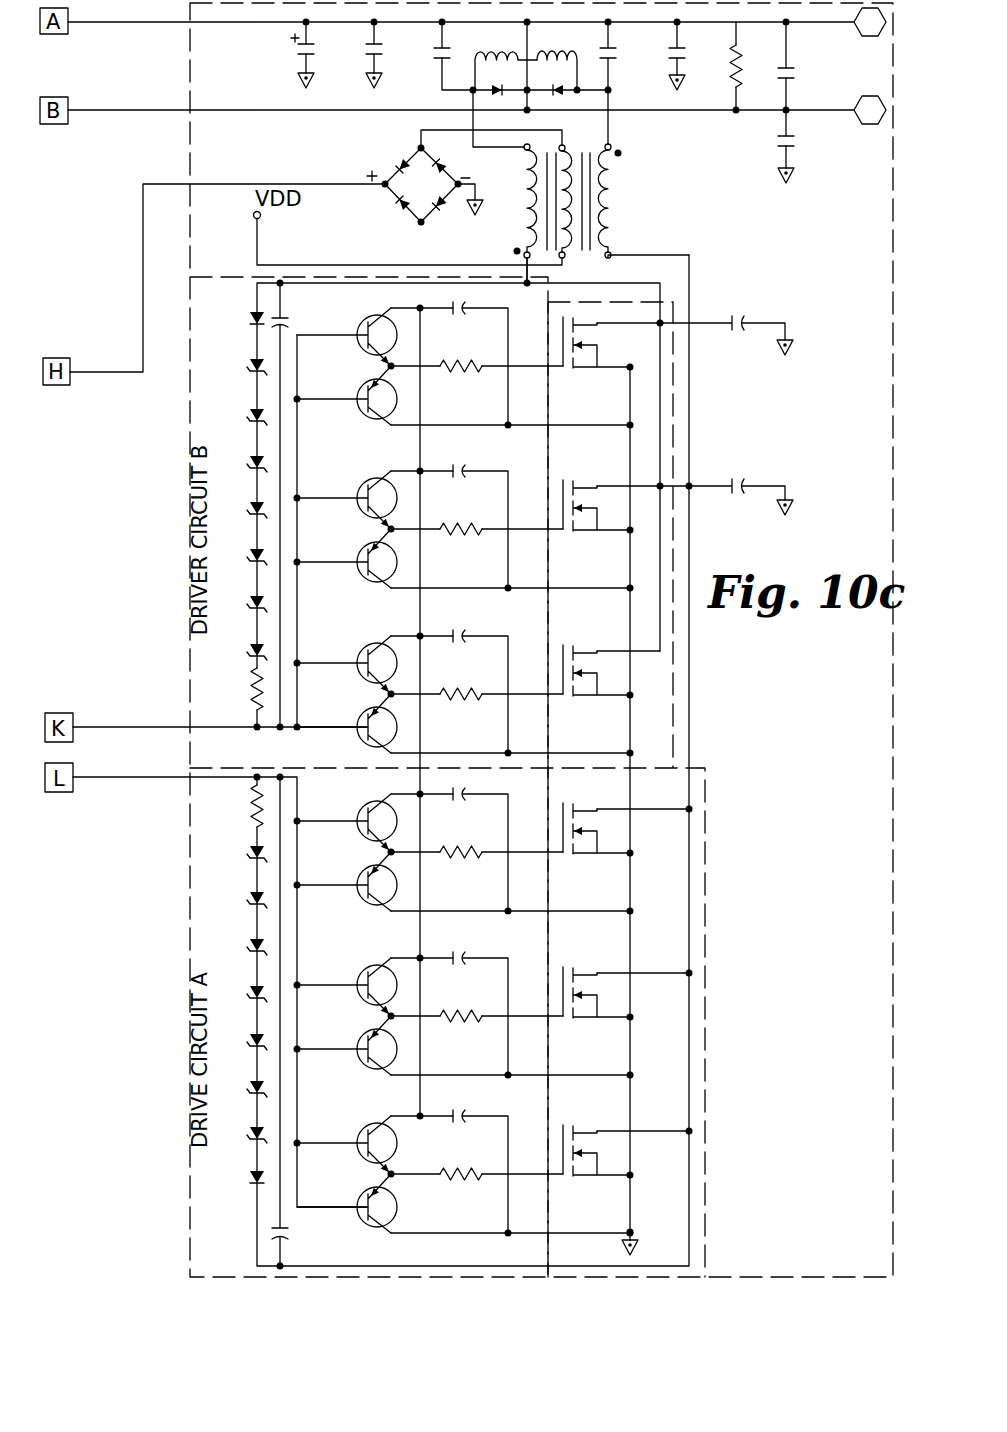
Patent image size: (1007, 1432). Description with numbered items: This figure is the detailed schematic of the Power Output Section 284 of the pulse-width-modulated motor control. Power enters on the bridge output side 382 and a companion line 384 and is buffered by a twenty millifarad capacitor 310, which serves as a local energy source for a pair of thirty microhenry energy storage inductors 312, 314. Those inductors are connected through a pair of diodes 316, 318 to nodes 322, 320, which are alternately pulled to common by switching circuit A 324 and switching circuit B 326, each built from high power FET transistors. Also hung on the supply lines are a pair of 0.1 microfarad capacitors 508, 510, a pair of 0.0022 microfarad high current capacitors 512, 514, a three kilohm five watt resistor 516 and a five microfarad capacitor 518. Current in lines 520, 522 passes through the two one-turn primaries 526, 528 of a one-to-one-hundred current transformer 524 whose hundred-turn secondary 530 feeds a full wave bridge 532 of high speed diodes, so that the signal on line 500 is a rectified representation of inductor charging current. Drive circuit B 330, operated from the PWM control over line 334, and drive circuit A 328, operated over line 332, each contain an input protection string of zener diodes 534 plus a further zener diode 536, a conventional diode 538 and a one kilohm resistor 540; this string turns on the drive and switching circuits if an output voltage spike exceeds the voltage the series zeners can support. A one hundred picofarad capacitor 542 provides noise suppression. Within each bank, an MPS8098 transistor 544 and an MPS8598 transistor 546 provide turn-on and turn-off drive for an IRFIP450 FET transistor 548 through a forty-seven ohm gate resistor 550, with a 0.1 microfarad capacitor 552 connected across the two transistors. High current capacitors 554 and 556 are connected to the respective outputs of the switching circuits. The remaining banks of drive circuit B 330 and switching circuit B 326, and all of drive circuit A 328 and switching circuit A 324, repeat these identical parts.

The other side of bridge 382 is at (150, 24).
The line B / terminal 384 is at (150, 108).
The capacitor 310 is at (300, 55).
The capacitor 508 is at (368, 60).
The high current capacitor 512 is at (441, 58).
The energy storage inductor 312 is at (488, 46).
The energy storage inductor 314 is at (577, 46).
The diode 316 is at (515, 87).
The diode 318 is at (575, 87).
The node 322 is at (470, 91).
The node 320 is at (610, 91).
The high current capacitor 514 is at (608, 56).
The capacitor 510 is at (678, 57).
The resistor 516 is at (742, 72).
The capacitor 518 is at (790, 82).
The line 522 is at (610, 134).
The line 520 is at (524, 149).
The current transformer 524 is at (590, 214).
The one-turn primary 526 is at (524, 228).
The one-turn primary 528 is at (611, 223).
The secondary 530 is at (567, 252).
The full wave bridge 532 is at (388, 205).
The line 500 is at (252, 188).
The conventional diode 538 is at (255, 312).
The capacitor 542 is at (283, 316).
The zener diodes 534 is at (253, 364).
The zener diode 536 is at (254, 655).
The drive circuit B 330 is at (231, 533).
The resistor 540 is at (252, 702).
The line 334 is at (135, 725).
The transistor 544 is at (366, 352).
The transistor 546 is at (366, 418).
The FET transistor 548 is at (590, 370).
The gate resistor 550 is at (470, 372).
The capacitor 552 is at (452, 310).
The capacitor 556 is at (732, 330).
The high current capacitor 554 is at (732, 492).
The switching circuit B 326 is at (597, 739).
The line 332 is at (137, 780).
The drive circuit A 328 is at (238, 826).
The switching circuit A 324 is at (673, 903).
The power output section 284 is at (805, 1147).